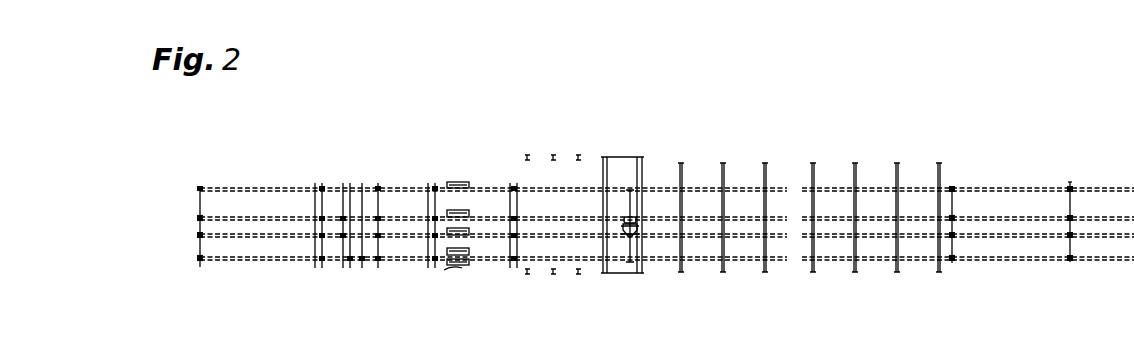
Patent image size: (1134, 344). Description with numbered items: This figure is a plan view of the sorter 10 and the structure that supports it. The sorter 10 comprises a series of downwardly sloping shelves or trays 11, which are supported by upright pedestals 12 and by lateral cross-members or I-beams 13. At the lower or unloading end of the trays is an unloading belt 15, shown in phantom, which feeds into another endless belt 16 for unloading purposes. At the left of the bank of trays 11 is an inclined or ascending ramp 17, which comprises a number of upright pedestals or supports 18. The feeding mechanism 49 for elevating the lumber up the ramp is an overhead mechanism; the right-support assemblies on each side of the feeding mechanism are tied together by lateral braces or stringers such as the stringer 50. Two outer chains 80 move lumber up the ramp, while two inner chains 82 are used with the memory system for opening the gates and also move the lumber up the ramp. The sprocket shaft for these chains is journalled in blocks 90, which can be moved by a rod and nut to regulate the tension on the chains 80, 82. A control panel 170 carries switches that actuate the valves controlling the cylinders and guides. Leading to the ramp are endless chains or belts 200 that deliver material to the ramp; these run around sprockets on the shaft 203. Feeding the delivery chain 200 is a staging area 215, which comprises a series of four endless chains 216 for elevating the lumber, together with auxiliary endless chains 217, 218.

The sorter 10 is at (975, 263).
The shelves or trays 11 is at (735, 190).
The upright pedestals 12 is at (724, 165).
The lateral cross-members or I-beams 13 is at (685, 168).
The unloading belt 15 is at (972, 191).
The endless belt 16 is at (1086, 187).
The inclined ramp or ascending ramp 17 is at (563, 192).
The upright pedestals or supports 18 is at (554, 161).
The feeding mechanism 49 is at (609, 158).
The lateral brace or stringer 50 is at (640, 178).
The outer chains 80 is at (525, 191).
The inner chains 82 is at (560, 218).
The journal blocks 90 is at (507, 201).
The control panel 170 is at (466, 268).
The endless chains or belts 200 is at (486, 182).
The shaft 203 is at (518, 208).
The staging area 215 is at (372, 186).
The endless chains 216 is at (400, 266).
The auxiliary endless chain 217 is at (370, 266).
The auxiliary endless chain 218 is at (328, 268).